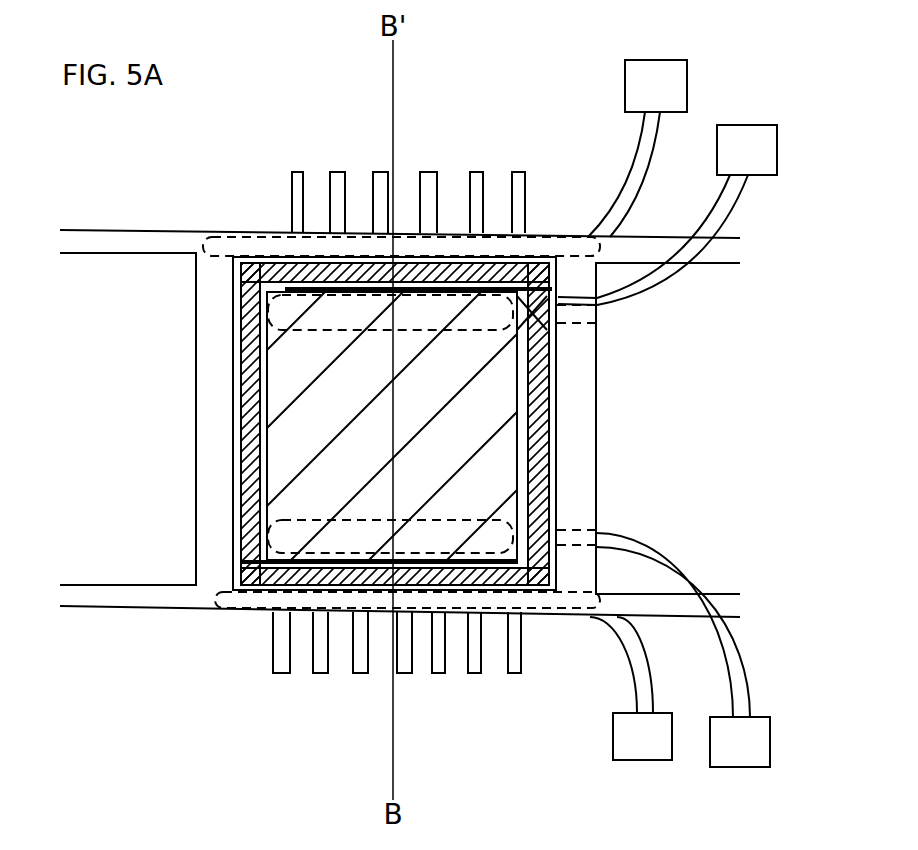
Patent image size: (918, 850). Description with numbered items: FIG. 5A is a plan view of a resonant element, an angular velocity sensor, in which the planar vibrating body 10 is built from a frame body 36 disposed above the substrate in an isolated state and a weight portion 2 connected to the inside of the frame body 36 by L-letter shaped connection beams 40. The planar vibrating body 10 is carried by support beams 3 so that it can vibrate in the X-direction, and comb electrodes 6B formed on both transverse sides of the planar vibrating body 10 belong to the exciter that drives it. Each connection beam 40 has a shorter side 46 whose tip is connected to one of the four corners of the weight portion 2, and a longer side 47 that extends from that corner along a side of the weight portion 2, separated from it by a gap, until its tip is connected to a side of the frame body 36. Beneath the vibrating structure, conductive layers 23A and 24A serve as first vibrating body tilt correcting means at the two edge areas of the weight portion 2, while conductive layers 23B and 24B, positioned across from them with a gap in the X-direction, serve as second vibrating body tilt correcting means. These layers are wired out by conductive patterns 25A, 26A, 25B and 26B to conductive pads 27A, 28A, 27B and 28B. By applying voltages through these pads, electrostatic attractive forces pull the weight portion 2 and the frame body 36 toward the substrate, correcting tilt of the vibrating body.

The weight portion 2 is at (497, 350).
The support beams 3 is at (155, 243).
The comb electrodes 6B is at (520, 172).
The planar vibrating body 10 is at (573, 237).
The conductive layer 23A is at (345, 553).
The conductive layer 23B is at (227, 617).
The conductive layer 24A is at (350, 305).
The conductive layer 24B is at (243, 250).
The conductive pattern 25A is at (665, 560).
The conductive pattern 25B is at (627, 653).
The conductive pattern 26A is at (682, 275).
The conductive pattern 26B is at (648, 142).
The conductive pad 27A is at (738, 770).
The conductive pad 27B is at (643, 768).
The conductive pad 28A is at (752, 123).
The conductive pad 28B is at (665, 58).
The frame body 36 is at (318, 217).
The connection beams 40 is at (385, 257).
The shorter sides 46 is at (262, 262).
The longer sides 47 is at (443, 279).